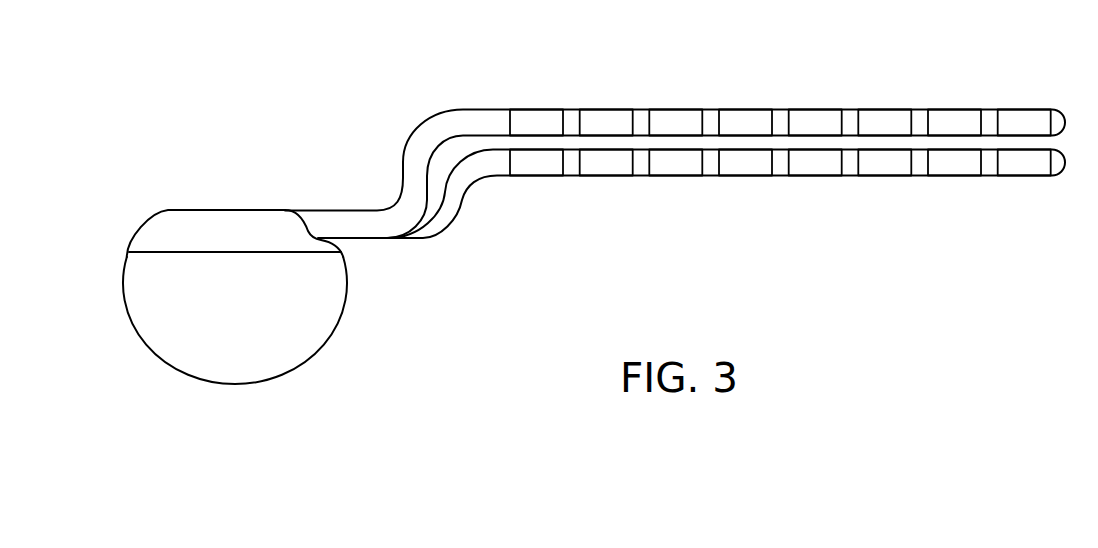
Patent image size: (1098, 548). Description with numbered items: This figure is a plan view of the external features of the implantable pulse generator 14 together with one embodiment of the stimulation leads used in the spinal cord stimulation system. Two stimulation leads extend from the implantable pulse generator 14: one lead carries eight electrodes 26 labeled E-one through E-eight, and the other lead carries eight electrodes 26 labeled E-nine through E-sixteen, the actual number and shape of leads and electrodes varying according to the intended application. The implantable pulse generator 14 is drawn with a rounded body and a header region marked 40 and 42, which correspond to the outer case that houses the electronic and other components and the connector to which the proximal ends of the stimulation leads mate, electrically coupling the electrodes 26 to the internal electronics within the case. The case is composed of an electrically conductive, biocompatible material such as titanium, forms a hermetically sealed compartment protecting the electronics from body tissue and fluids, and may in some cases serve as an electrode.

The implantable pulse generator (IPG) 14 is at (249, 261).
The outer case of the IPG 40 is at (335, 282).
The connector/header of the IPG 42 is at (242, 214).
The electrodes 26 is at (742, 109).